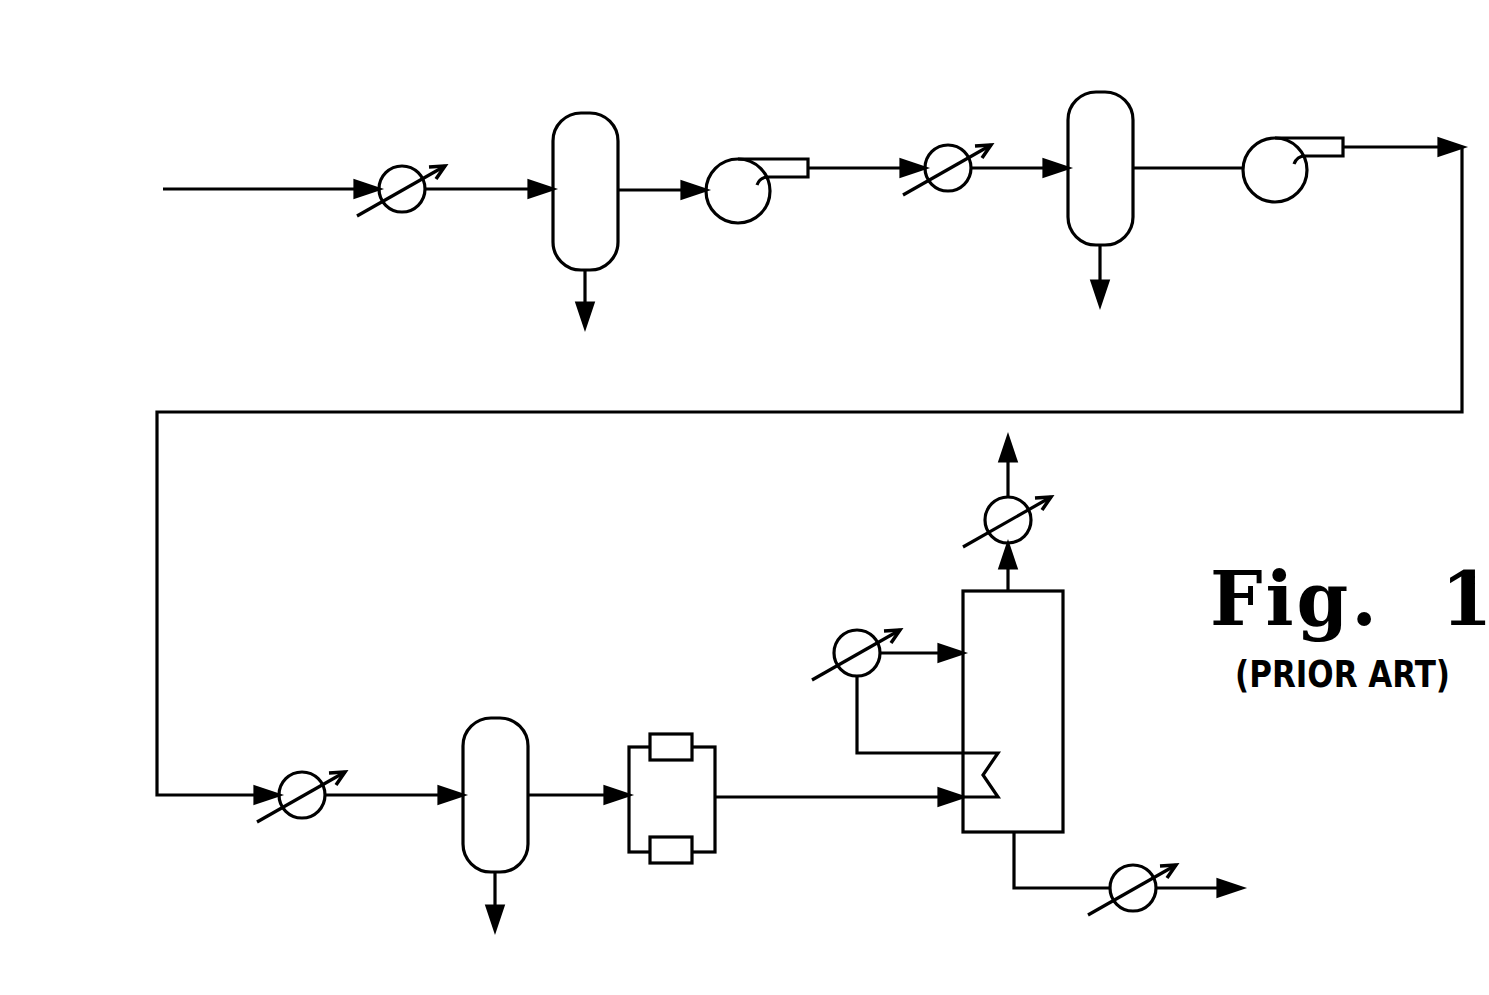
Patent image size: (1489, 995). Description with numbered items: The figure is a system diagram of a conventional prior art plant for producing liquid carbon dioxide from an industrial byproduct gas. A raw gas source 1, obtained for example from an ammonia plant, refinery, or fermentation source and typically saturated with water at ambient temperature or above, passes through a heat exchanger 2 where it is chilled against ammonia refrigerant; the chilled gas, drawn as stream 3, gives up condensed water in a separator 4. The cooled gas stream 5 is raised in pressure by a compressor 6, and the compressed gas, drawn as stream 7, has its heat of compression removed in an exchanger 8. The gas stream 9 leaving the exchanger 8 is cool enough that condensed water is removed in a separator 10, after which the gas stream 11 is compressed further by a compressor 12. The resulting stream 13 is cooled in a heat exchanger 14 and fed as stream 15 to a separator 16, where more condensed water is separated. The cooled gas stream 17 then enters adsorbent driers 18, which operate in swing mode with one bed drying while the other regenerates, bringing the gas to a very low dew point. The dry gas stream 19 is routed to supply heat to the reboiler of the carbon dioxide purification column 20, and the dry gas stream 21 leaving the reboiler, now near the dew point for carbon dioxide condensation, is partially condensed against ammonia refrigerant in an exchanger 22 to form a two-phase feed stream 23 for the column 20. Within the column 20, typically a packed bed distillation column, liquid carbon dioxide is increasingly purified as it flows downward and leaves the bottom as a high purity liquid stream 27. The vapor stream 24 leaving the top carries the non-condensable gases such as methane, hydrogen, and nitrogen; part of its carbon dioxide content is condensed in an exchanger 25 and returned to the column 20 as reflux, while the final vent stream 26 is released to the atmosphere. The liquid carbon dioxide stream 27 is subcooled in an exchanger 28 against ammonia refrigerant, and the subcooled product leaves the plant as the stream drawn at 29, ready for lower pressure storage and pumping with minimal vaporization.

The raw gas source 1 is at (252, 190).
The heat exchanger 2 is at (390, 166).
The line 3 is at (475, 196).
The separator 4 is at (555, 228).
The cooled gas stream 5 is at (645, 188).
The compressor 6 is at (748, 160).
The line 7 is at (853, 170).
The exchanger 8 is at (930, 150).
The gas stream 9 is at (1008, 172).
The separator 10 is at (1133, 232).
The gas stream 11 is at (1198, 164).
The compressor 12 is at (1276, 138).
The stream 13 is at (1395, 148).
The heat exchanger 14 is at (298, 772).
The stream 15 is at (377, 793).
The separator 16 is at (463, 823).
The cooled gas stream 17 is at (566, 793).
The adsorbent driers 18 is at (680, 732).
The dry gas stream 19 is at (823, 800).
The CO2 purification column 20 is at (1065, 700).
The dry gas stream 21 is at (903, 750).
The exchanger 22 is at (845, 632).
The two-phase feed stream 23 is at (918, 645).
The vapor stream 24 is at (1015, 580).
The exchanger 25 is at (990, 500).
The final vent stream 26 is at (1010, 478).
The liquid CO2 stream 27 is at (1060, 893).
The exchanger 28 is at (1118, 868).
The outlet line 29 is at (1195, 885).